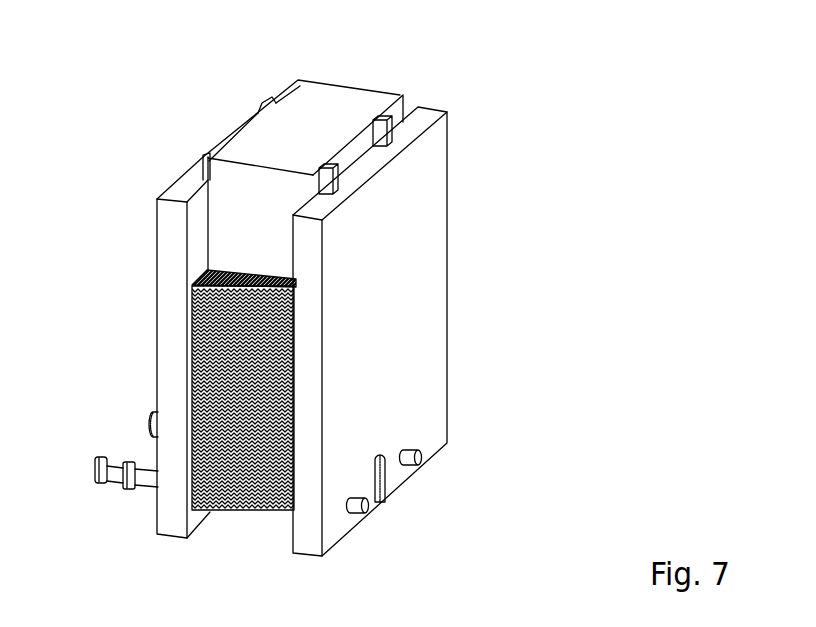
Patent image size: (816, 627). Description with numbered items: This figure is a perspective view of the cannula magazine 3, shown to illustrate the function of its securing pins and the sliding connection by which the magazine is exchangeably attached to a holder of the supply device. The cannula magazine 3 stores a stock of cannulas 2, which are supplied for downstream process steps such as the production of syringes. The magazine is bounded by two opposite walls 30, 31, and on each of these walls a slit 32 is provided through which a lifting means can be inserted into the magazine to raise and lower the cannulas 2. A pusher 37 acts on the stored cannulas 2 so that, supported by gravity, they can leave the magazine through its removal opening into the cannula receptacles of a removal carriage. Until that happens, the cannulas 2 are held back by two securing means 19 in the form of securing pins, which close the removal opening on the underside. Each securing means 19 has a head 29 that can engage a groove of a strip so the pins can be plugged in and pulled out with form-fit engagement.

The cannulas 2 is at (233, 443).
The cannula magazine 3 is at (299, 145).
The securing means 19 is at (421, 453).
The heads 29 is at (112, 462).
The wall 30 is at (172, 210).
The wall 31 is at (427, 233).
The slit 32 is at (384, 478).
The pusher 37 is at (312, 128).